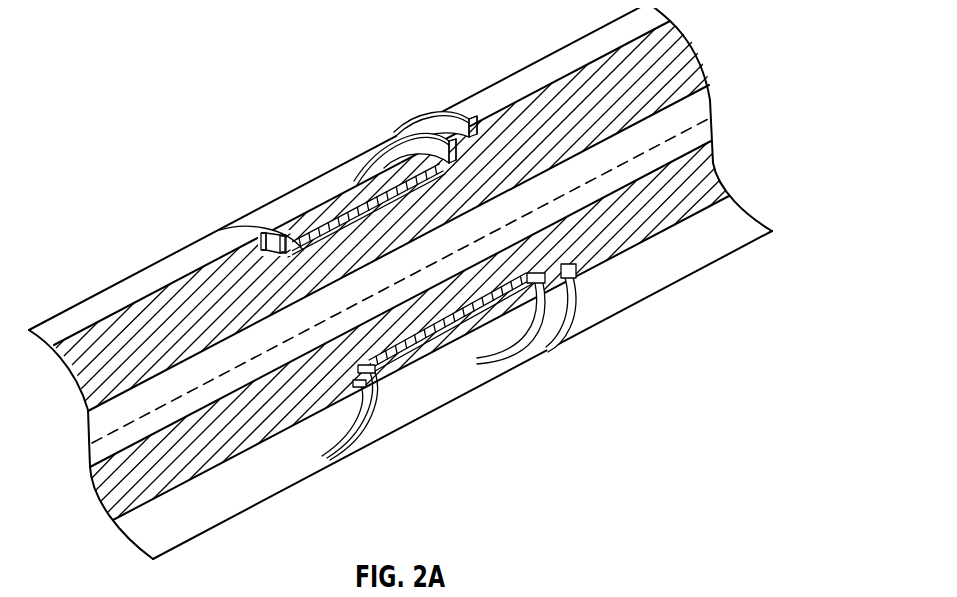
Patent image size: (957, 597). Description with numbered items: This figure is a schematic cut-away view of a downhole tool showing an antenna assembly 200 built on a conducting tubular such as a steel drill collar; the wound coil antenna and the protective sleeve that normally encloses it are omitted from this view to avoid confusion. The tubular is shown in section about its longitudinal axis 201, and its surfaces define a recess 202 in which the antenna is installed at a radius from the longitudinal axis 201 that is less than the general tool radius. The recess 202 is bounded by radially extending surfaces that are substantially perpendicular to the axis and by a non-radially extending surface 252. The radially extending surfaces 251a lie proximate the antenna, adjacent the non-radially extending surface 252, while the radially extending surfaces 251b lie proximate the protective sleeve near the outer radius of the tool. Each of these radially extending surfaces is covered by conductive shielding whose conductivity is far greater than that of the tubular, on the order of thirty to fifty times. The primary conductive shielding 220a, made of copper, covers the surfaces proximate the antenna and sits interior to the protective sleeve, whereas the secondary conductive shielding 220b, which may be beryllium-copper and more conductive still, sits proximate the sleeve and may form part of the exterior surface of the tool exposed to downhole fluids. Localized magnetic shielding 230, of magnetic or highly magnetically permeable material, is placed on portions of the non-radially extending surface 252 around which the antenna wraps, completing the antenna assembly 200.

The antenna assembly 200 is at (266, 157).
The longitudinal axis 201 is at (350, 317).
The recess 202 is at (244, 222).
The primary conductive shielding 220a is at (400, 152).
The secondary conductive shielding 220b is at (440, 126).
The localized magnetic shielding 230 is at (332, 205).
The radially extending surfaces proximate the antenna 251a is at (318, 270).
The radially extending surfaces proximate the protective sleeve 251b is at (257, 247).
The non-radially extending surface 252 is at (303, 246).